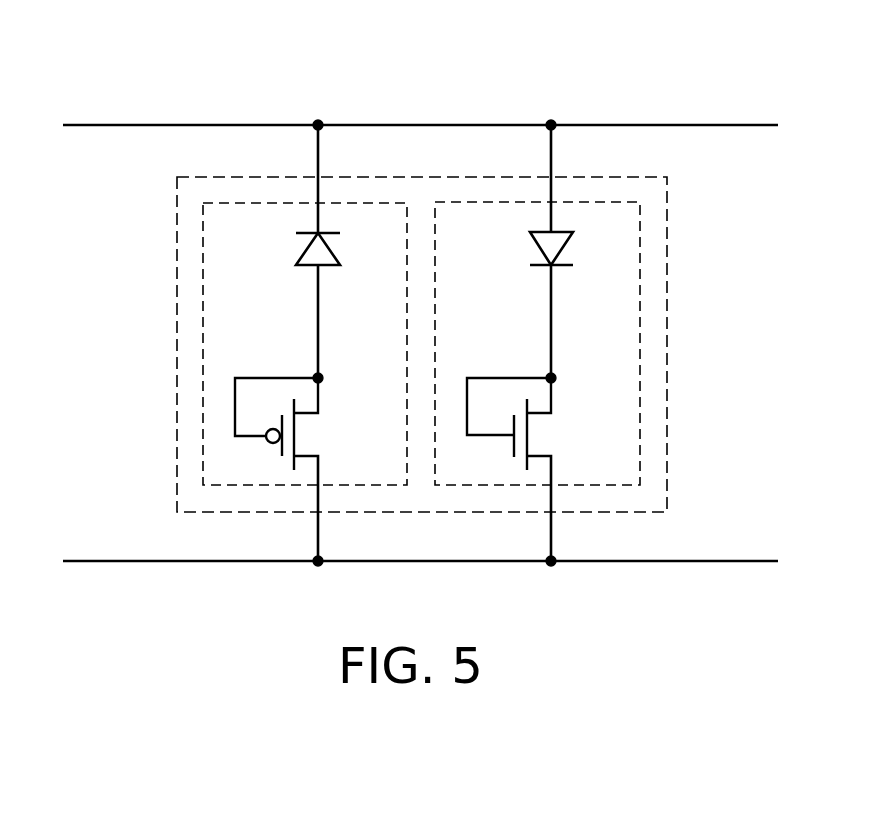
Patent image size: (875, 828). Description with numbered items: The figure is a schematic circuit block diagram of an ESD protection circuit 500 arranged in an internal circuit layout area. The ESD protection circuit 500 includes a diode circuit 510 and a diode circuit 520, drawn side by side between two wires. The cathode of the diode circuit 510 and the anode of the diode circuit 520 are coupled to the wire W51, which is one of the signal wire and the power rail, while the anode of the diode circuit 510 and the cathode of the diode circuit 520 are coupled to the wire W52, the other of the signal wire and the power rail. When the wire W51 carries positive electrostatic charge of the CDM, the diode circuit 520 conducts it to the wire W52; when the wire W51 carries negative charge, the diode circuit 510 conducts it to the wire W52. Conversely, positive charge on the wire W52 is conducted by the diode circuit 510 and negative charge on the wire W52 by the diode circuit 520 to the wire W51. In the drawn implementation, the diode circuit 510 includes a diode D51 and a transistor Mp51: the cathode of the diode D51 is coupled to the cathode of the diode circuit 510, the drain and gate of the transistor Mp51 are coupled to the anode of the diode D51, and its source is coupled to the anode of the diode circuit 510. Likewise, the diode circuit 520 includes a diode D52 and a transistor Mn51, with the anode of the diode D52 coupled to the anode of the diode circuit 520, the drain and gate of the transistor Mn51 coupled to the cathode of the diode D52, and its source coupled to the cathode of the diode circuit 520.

The wire W51 is at (728, 125).
The wire W52 is at (728, 561).
The ESD protection circuit 500 is at (667, 378).
The diode circuit 510 is at (203, 278).
The diode circuit 520 is at (640, 277).
The diode D51 is at (343, 251).
The diode D52 is at (579, 251).
The transistor Mp51 is at (301, 467).
The transistor Mn51 is at (535, 467).